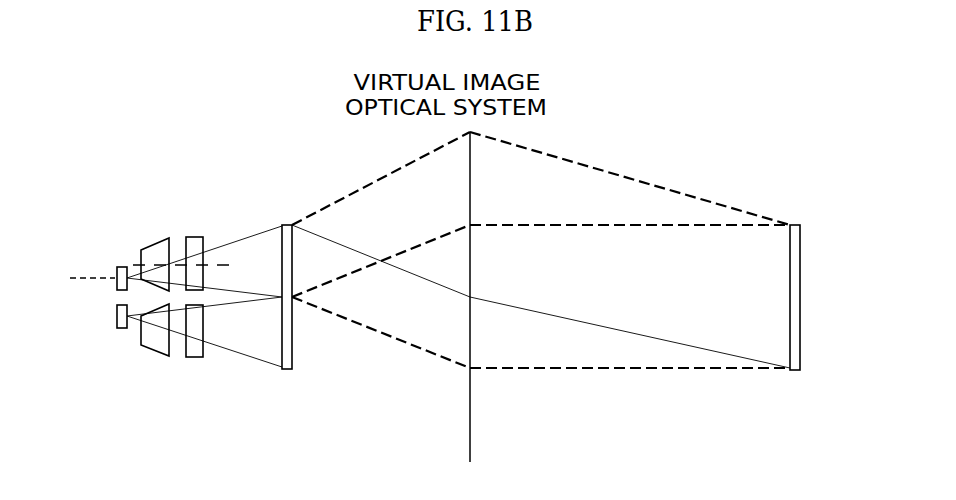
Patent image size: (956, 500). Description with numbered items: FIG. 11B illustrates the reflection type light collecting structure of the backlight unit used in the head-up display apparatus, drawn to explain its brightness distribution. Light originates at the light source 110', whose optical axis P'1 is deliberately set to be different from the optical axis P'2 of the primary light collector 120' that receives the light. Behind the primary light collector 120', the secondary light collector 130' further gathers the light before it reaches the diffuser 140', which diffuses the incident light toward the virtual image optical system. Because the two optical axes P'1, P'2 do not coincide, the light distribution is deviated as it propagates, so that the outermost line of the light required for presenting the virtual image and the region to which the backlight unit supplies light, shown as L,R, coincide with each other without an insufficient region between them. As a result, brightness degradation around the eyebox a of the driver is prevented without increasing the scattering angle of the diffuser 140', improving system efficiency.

The light source 110' is at (111, 345).
The primary light collector 120' is at (155, 345).
The secondary light collector 130' is at (214, 345).
The diffuser 140' is at (309, 346).
The optical axis of the light source P'1 is at (89, 244).
The optical axis of the primary light collector P'2 is at (184, 232).
The required region outermost line and supplied region L,R is at (661, 186).
The eyebox a is at (787, 352).